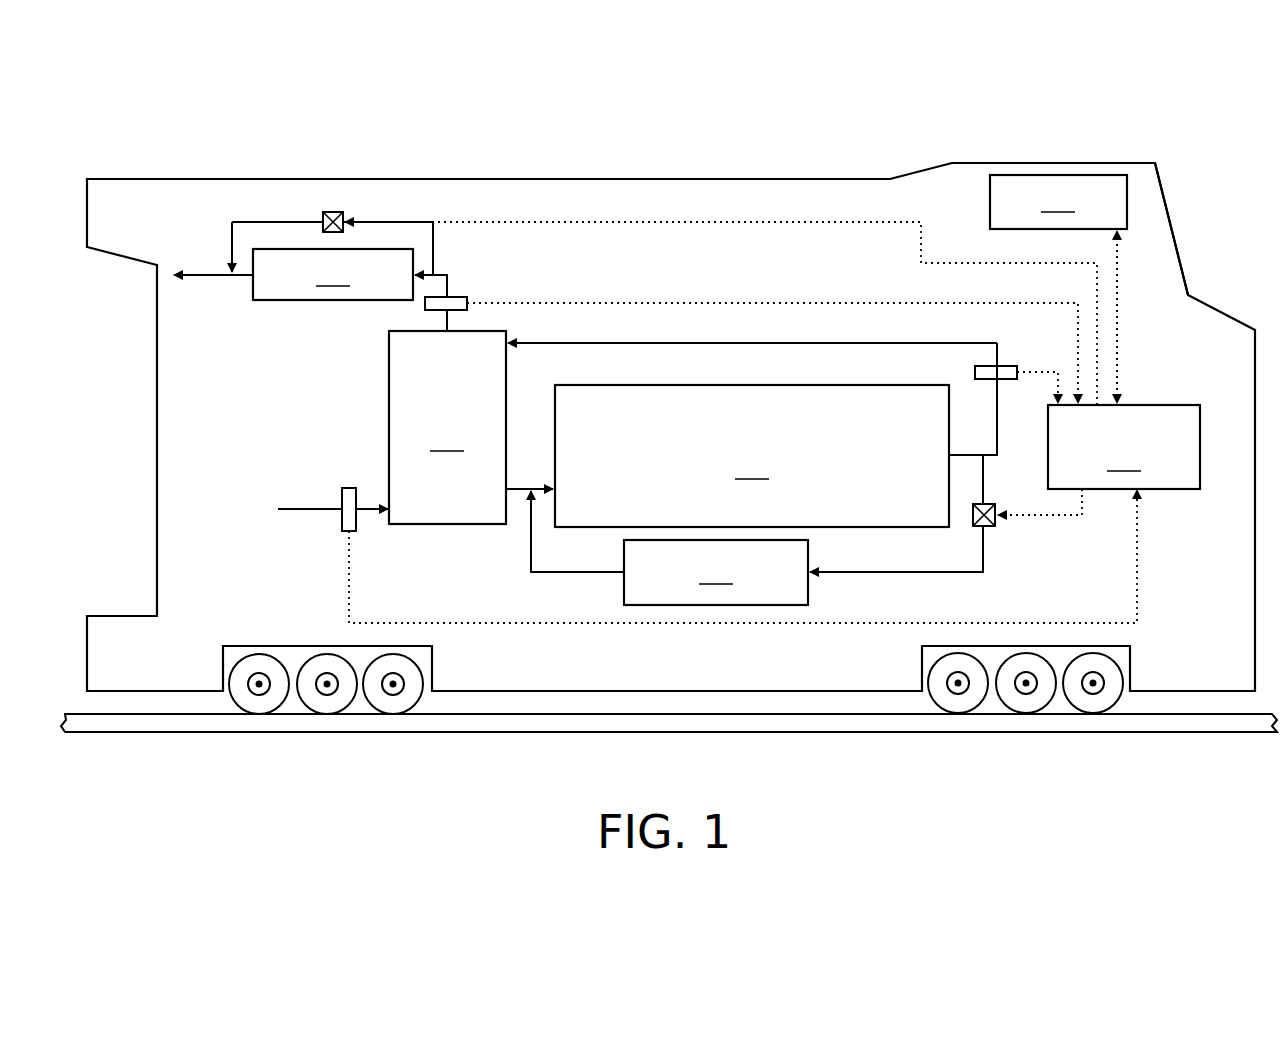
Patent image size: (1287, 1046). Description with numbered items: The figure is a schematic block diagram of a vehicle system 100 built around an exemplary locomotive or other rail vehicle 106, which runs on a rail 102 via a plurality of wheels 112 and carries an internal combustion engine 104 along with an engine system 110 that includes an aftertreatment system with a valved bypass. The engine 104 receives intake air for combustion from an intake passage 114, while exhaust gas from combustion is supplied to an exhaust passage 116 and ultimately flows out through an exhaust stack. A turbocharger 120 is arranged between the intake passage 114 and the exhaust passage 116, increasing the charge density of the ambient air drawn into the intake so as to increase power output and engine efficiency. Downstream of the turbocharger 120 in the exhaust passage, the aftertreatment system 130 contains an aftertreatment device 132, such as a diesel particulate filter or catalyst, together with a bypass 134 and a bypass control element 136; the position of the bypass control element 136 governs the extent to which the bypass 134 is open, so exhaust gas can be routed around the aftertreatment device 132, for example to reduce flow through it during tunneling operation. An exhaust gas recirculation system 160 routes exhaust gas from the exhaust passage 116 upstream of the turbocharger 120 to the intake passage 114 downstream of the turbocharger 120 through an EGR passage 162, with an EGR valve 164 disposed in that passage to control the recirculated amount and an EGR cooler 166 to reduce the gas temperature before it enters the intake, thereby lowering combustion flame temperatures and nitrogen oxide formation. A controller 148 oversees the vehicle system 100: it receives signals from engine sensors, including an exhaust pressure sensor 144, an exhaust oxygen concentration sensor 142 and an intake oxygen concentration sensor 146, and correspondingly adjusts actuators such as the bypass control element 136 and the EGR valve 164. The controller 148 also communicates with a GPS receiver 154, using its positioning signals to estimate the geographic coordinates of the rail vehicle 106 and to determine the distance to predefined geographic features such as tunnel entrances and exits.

The vehicle system 100 is at (1097, 124).
The rail 102 is at (1190, 733).
The internal combustion engine 104 is at (752, 456).
The rail vehicle 106 is at (703, 178).
The engine system 110 is at (468, 150).
The wheels 112 is at (432, 666).
The intake passage 114 is at (310, 506).
The exhaust passage 116 is at (903, 345).
The turbocharger 120 is at (447, 427).
The aftertreatment system 130 is at (218, 248).
The aftertreatment device 132 is at (333, 274).
The bypass 134 is at (437, 250).
The bypass control element 136 is at (330, 212).
The exhaust oxygen concentration sensor 142 is at (1000, 366).
The exhaust pressure sensor 144 is at (452, 297).
The intake oxygen concentration sensor 146 is at (349, 486).
The controller 148 is at (1124, 447).
The GPS receiver 154 is at (1058, 289).
The exhaust gas recirculation system 160 is at (1008, 590).
The EGR passage 162 is at (922, 576).
The EGR valve 164 is at (988, 527).
The EGR cooler 166 is at (657, 547).